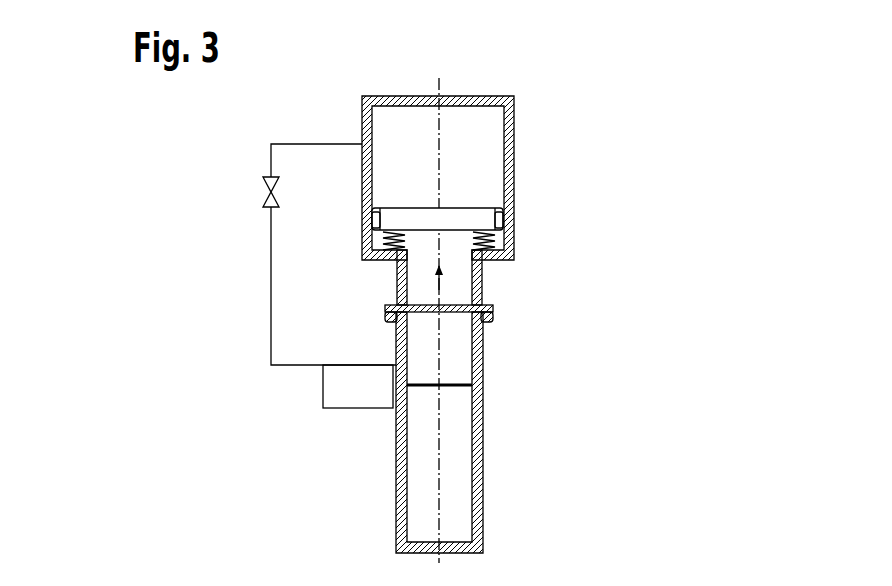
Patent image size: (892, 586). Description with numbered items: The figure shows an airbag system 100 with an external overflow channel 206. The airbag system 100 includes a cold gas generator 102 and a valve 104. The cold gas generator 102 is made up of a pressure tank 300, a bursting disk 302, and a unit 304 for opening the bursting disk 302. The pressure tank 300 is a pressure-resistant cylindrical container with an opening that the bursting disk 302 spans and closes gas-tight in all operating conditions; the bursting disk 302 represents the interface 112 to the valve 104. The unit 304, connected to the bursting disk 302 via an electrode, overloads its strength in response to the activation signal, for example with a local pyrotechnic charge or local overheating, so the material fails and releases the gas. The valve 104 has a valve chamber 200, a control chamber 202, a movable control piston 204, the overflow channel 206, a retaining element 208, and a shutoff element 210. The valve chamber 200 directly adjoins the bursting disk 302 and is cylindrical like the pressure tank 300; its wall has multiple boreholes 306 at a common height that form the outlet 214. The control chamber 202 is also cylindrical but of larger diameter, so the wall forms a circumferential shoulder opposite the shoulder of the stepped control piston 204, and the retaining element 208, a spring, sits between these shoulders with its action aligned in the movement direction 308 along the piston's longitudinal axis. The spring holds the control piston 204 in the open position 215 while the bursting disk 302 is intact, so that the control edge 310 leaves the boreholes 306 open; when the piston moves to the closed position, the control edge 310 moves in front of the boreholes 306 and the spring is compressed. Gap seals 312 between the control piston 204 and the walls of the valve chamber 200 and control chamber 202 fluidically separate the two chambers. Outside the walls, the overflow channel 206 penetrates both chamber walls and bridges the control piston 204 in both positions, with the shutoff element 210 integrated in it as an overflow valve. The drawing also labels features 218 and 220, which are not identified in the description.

The airbag system 100 is at (185, 239).
The cold gas generator 102 is at (596, 429).
The valve 104 is at (597, 206).
The interface 112 is at (462, 380).
The valve chamber 200 is at (462, 348).
The control chamber 202 is at (490, 133).
The control piston 204 is at (511, 277).
The overflow channel 206 is at (271, 322).
The retaining element 208 is at (490, 238).
The shutoff element 210 is at (262, 190).
The outlet 214 is at (494, 312).
The open position 215 is at (462, 282).
The opening 218 is at (418, 319).
The plate 220 is at (483, 206).
The pressure tank 300 is at (457, 478).
The bursting disk 302 is at (516, 378).
The unit for opening 304 is at (323, 387).
The boreholes 306 is at (505, 313).
The movement direction 308 is at (397, 266).
The control edge 310 is at (391, 313).
The gap seal 312 is at (362, 225).